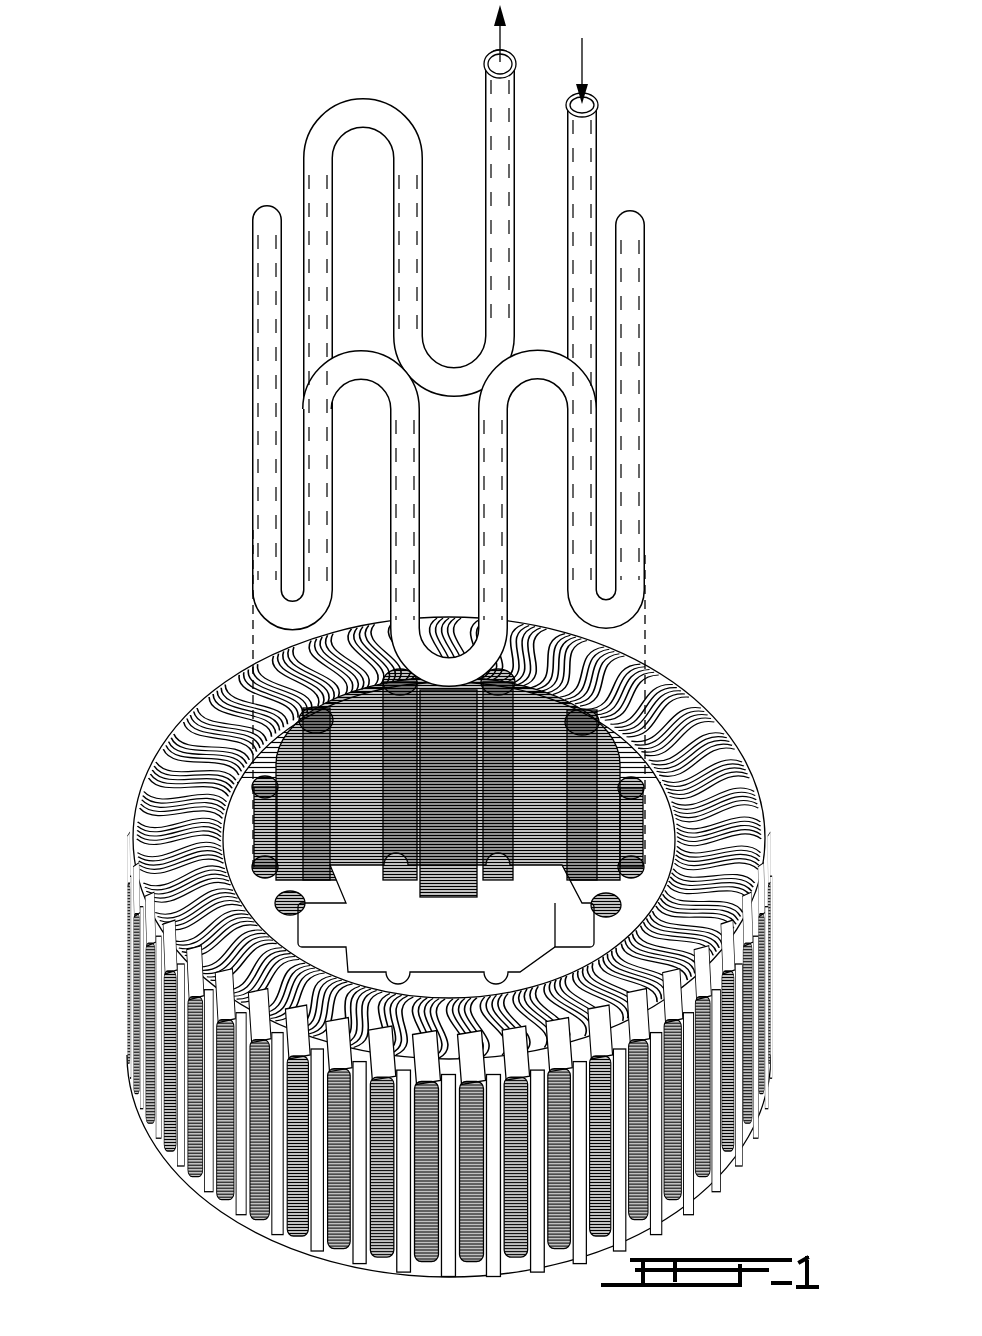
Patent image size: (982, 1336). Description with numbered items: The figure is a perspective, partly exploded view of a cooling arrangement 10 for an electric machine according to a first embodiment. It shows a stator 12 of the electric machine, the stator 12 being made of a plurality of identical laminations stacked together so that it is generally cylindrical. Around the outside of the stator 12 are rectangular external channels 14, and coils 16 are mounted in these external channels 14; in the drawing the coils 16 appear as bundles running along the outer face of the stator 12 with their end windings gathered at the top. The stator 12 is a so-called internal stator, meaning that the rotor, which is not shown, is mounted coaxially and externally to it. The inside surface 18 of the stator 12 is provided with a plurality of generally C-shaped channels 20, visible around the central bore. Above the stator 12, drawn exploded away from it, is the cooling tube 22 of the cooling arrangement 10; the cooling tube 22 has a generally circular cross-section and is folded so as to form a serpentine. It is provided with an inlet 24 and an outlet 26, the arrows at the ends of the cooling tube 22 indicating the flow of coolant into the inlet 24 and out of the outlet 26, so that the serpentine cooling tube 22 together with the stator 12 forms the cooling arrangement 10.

The cooling arrangement 10 is at (130, 212).
The stator 12 is at (677, 776).
The external channels 14 is at (634, 665).
The coils 16 is at (668, 665).
The inside surface 18 is at (627, 840).
The C-shaped channels 20 is at (253, 857).
The cooling tube 22 is at (500, 338).
The inlet 24 is at (596, 100).
The outlet 26 is at (494, 60).